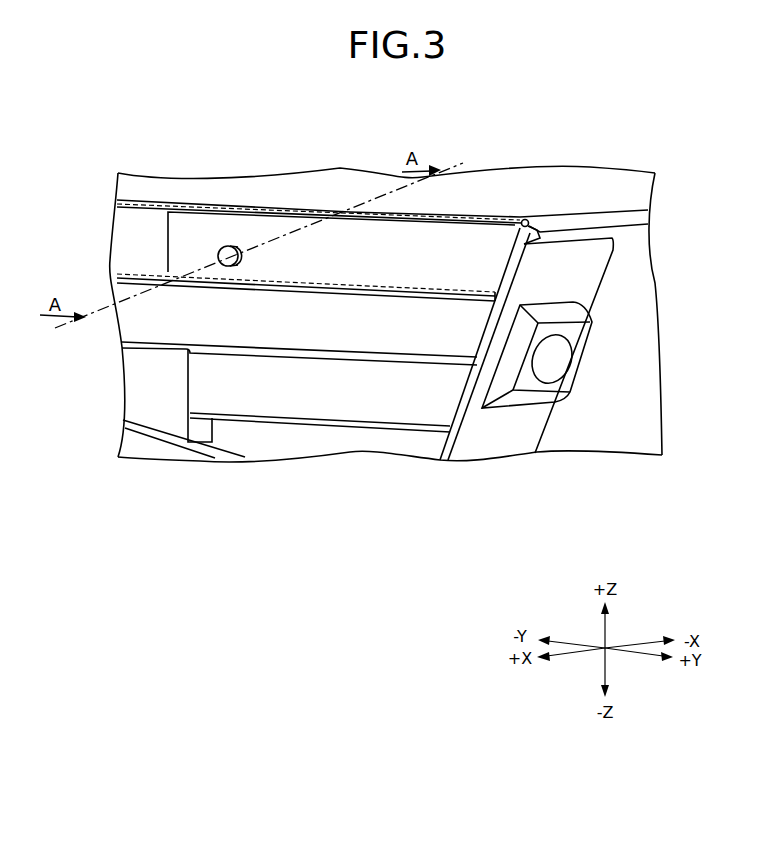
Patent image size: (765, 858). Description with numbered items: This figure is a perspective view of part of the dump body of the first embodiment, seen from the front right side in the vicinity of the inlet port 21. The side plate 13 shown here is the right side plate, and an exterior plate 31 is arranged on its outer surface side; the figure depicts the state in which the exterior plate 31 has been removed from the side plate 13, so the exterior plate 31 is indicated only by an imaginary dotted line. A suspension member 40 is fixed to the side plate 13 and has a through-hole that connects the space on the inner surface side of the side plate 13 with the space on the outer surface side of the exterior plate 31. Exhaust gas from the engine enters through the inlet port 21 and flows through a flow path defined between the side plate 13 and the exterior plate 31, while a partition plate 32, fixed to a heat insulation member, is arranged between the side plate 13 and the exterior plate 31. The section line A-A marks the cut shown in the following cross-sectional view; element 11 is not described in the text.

The frame member 11 is at (568, 437).
The side plate 13 is at (267, 300).
The inlet port 21 is at (562, 360).
The exterior plate 31 is at (138, 223).
The partition plate 32 is at (303, 230).
The suspension member 40 is at (239, 244).